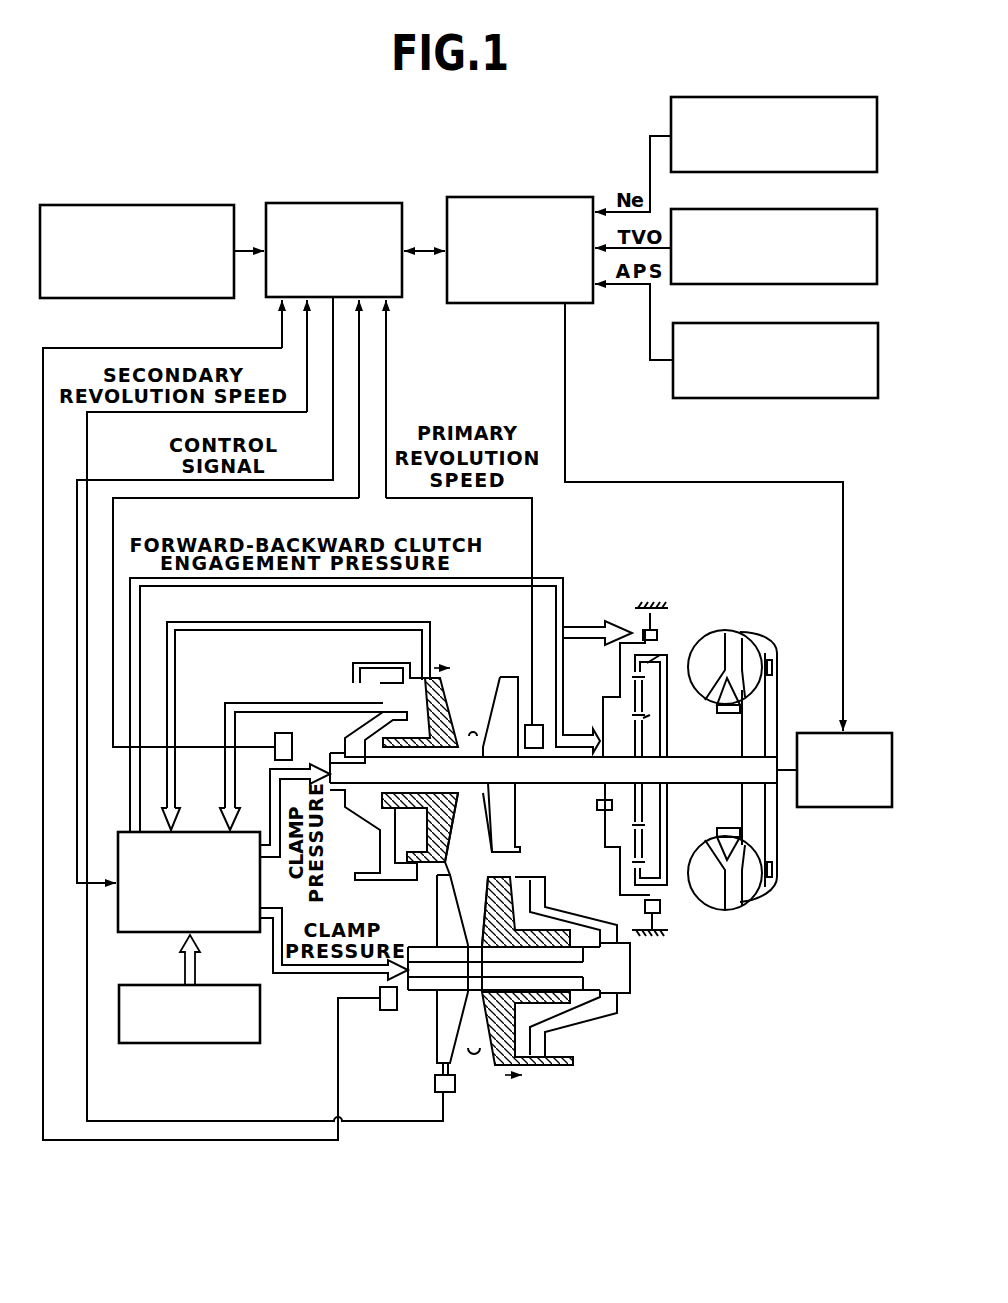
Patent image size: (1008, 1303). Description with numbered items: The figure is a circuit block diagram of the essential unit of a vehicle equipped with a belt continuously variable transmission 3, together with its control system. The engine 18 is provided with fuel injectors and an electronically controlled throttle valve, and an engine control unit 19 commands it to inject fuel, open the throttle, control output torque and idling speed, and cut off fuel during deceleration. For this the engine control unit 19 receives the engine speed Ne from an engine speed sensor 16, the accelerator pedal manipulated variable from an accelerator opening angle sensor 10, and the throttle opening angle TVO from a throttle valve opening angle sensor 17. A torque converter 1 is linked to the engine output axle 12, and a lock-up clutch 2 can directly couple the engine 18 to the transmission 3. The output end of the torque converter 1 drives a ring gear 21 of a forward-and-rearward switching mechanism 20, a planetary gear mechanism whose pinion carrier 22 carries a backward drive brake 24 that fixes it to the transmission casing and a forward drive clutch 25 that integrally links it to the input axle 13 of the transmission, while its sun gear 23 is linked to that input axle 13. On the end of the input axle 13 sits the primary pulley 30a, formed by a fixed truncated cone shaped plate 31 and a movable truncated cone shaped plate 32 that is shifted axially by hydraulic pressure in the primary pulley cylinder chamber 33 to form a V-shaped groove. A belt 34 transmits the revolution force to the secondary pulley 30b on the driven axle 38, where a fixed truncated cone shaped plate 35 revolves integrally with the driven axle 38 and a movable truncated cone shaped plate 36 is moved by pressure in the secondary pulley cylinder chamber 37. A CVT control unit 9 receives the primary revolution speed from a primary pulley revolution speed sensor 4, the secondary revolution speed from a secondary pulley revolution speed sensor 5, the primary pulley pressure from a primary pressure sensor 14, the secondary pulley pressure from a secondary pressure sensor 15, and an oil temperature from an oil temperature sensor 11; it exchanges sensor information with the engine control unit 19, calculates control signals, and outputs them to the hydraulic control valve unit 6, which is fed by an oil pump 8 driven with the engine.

The torque converter 1 is at (742, 628).
The lock-up clutch 2 is at (778, 837).
The belt continuously variable transmission 3 is at (500, 1096).
The primary pulley revolution speed sensor 4 is at (537, 723).
The secondary pulley revolution speed sensor 5 is at (452, 1093).
The hydraulic control valve unit 6 is at (157, 933).
The oil pump 8 is at (217, 1044).
The CVT control unit 9 is at (341, 203).
The accelerator opening angle sensor 10 is at (770, 323).
The oil temperature sensor 11 is at (130, 205).
The engine output axle 12 is at (682, 776).
The input axle of the transmission 13 is at (557, 778).
The primary pressure sensor 14 is at (270, 760).
The secondary pressure sensor 15 is at (381, 1010).
The engine speed sensor 16 is at (770, 97).
The throttle valve opening angle sensor 17 is at (770, 209).
The engine 18 is at (875, 733).
The engine control unit 19 is at (530, 197).
The forward-and-rearward switching mechanism 20 is at (692, 918).
The ring gear 21 is at (647, 663).
The pinion carrier 22 is at (605, 692).
The sun gear 23 is at (643, 718).
The backward drive brake 24 is at (643, 631).
The forward drive clutch 25 is at (600, 812).
The primary pulley 30a is at (356, 840).
The secondary pulley 30b is at (420, 1013).
The fixed truncated cone shaped plate 31 is at (508, 677).
The movable truncated cone shaped plate 32 is at (445, 708).
The primary pulley cylinder chamber 33 is at (380, 700).
The belt 34 is at (480, 863).
The fixed truncated cone shaped plate 35 is at (445, 922).
The movable truncated cone shaped plate 36 is at (560, 1065).
The secondary pulley cylinder chamber 37 is at (578, 1005).
The driven axle 38 is at (632, 972).